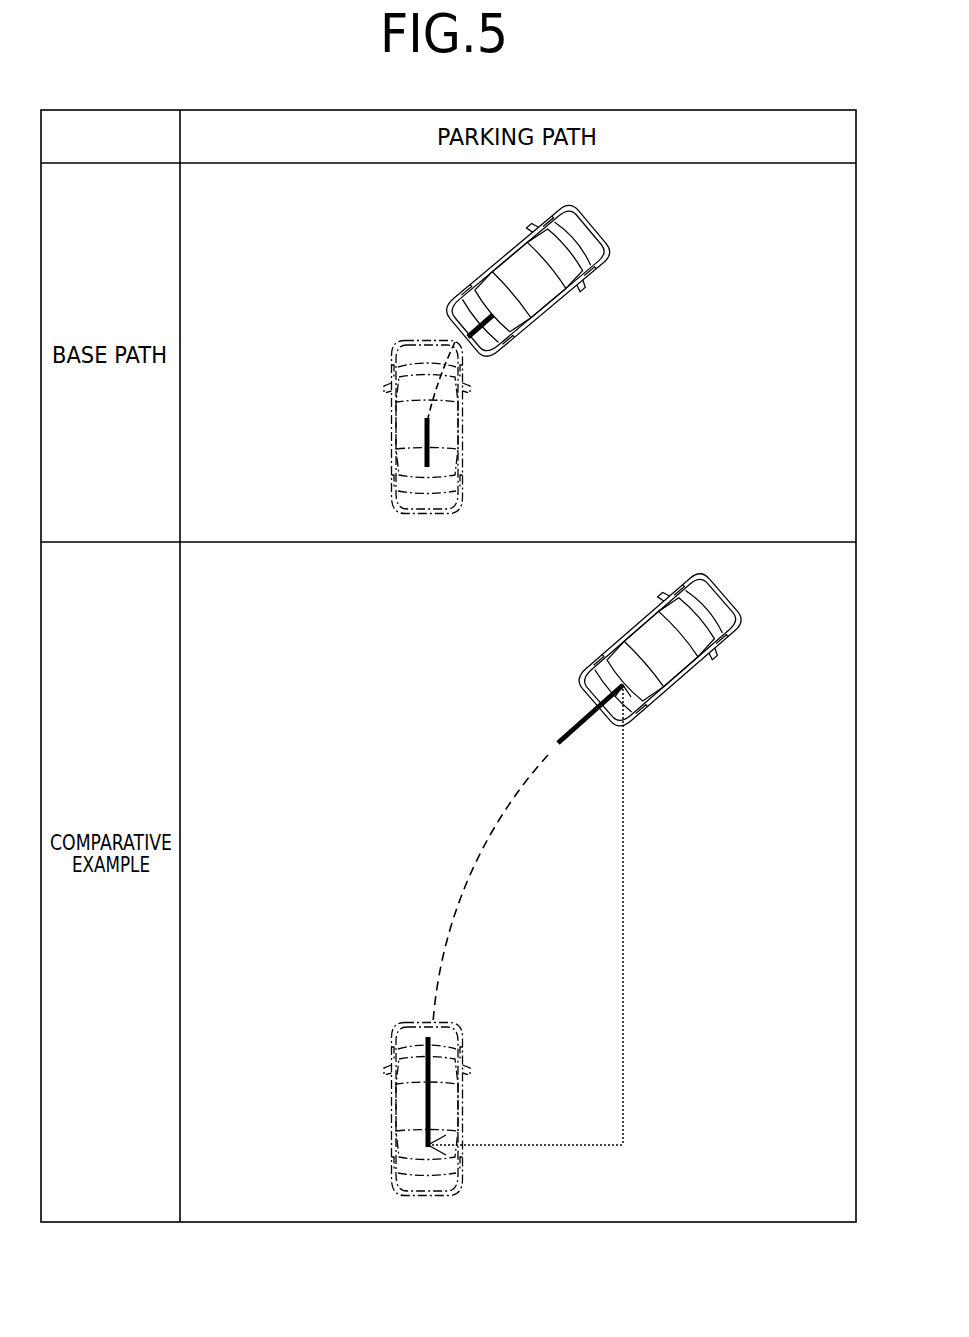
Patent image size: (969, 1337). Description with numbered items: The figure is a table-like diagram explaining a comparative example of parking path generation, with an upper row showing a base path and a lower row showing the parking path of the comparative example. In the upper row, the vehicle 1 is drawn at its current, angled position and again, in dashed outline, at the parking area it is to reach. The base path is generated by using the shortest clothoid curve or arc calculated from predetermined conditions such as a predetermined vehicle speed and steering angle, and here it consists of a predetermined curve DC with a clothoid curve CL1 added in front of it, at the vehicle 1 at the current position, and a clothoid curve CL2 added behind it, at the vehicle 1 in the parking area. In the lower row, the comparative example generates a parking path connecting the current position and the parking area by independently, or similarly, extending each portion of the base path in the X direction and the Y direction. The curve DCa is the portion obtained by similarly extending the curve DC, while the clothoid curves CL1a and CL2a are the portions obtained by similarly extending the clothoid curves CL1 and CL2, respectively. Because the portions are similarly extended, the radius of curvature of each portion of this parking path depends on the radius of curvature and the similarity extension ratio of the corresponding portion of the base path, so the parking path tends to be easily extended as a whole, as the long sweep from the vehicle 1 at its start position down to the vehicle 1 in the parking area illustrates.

The vehicle 1 is at (592, 215).
The clothoid curve CL1 is at (473, 320).
The clothoid curve CL2 is at (424, 448).
The predetermined curve DC is at (455, 342).
The clothoid curve CL1a is at (580, 713).
The clothoid curve CL2a is at (425, 1055).
The curve DCa is at (483, 846).
The X direction X is at (525, 1155).
The Y direction Y is at (632, 915).